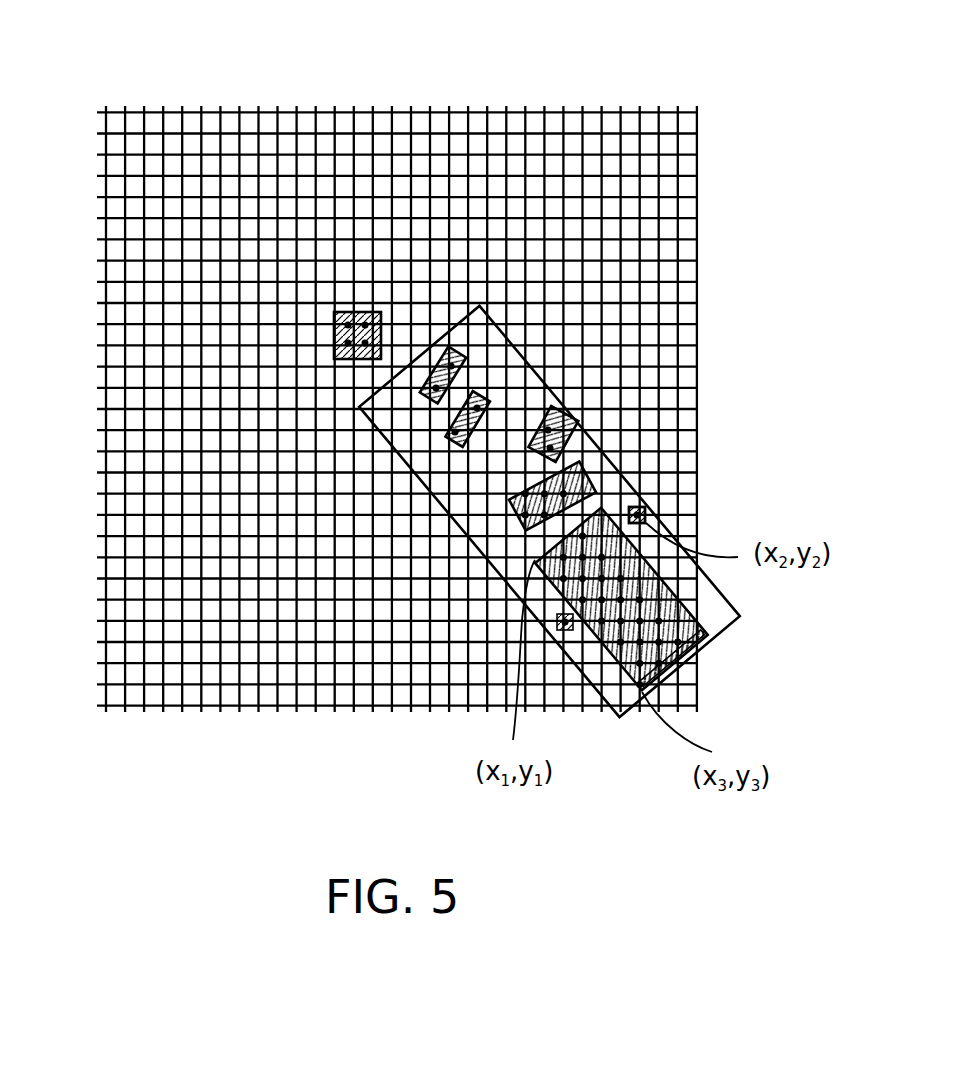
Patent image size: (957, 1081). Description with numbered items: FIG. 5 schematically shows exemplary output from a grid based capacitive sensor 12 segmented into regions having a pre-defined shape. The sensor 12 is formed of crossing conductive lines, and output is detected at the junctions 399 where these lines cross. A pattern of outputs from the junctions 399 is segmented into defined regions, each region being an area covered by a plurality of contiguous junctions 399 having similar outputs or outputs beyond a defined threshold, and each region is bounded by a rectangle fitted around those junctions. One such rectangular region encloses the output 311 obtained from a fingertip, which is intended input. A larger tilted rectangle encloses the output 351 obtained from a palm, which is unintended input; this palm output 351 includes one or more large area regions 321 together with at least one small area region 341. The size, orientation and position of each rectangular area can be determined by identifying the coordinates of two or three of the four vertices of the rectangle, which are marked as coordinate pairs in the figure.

The sensor 12 is at (632, 88).
The output obtained from a fingertip 311 is at (358, 312).
The junctions 399 is at (346, 341).
The small area region 341 is at (462, 356).
The large area region 321 is at (684, 607).
The output obtained from a palm 351 is at (463, 530).